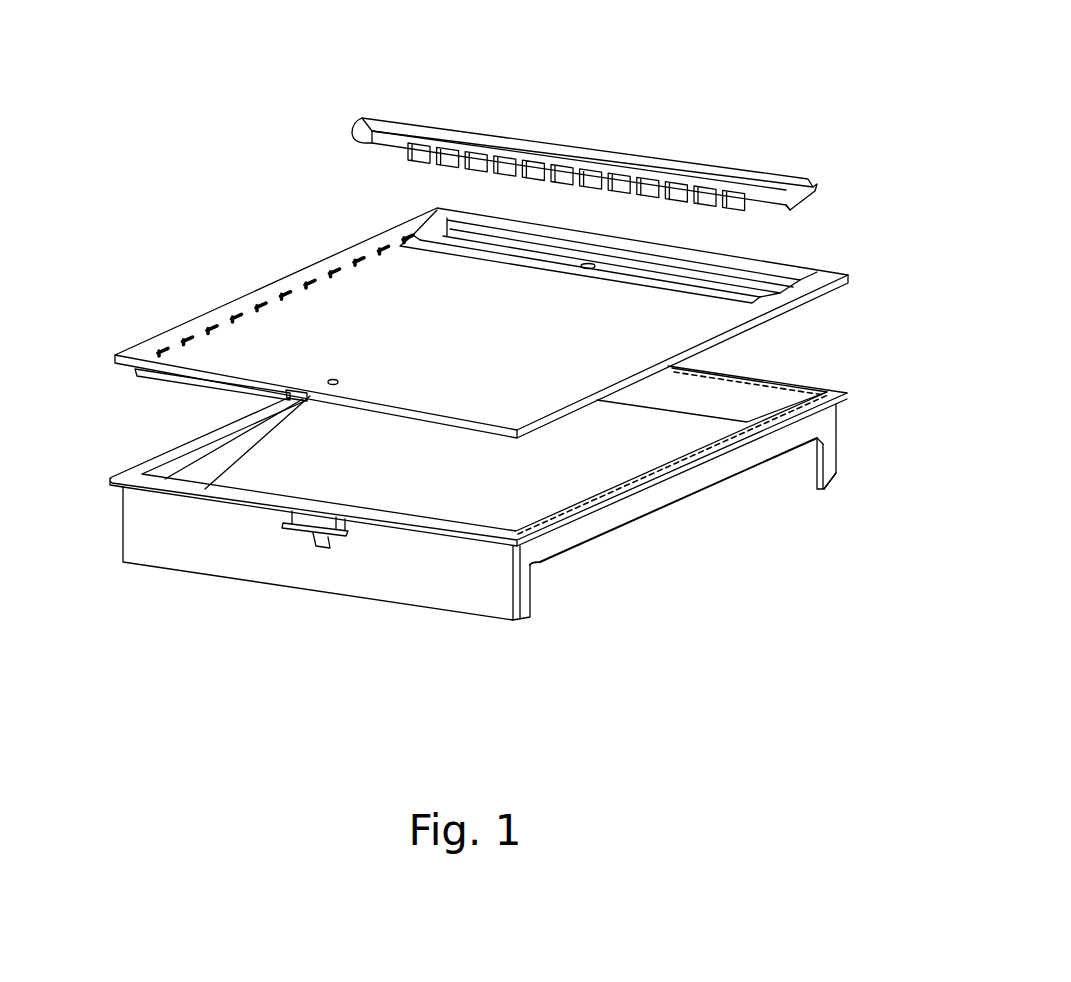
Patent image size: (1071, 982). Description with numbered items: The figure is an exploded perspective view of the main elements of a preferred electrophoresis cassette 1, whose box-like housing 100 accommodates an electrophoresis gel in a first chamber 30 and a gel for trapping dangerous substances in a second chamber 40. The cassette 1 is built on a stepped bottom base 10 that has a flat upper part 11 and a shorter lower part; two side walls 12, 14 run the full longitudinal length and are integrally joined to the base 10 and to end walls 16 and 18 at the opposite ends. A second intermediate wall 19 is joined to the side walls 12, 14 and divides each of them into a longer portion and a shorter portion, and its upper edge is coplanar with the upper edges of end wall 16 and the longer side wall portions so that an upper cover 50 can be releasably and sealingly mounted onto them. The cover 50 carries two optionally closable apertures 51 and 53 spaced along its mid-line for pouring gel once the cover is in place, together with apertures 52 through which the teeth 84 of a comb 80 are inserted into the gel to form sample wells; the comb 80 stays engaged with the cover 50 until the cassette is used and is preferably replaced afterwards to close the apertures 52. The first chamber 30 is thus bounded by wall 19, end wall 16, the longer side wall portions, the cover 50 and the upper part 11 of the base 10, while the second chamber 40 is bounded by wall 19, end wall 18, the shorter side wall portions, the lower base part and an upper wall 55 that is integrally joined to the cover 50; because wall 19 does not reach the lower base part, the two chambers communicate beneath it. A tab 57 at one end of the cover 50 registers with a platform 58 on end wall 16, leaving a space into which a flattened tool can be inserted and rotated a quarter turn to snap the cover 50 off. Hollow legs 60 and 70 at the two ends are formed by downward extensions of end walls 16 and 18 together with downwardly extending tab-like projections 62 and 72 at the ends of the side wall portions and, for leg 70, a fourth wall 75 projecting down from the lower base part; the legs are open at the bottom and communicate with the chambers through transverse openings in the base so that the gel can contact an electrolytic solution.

The cassette 1 is at (820, 115).
The stepped bottom base 10 is at (543, 502).
The flat upper part 11 is at (587, 475).
The side wall 12 is at (653, 490).
The side wall 14 is at (183, 443).
The end wall 16 is at (273, 570).
The end wall 18 is at (800, 382).
The second intermediate wall 19 is at (143, 375).
The first chamber 30 is at (428, 502).
The second chamber 40 is at (700, 417).
The upper cover 50 is at (357, 287).
The closable aperture 51 is at (590, 263).
The apertures 52 is at (410, 235).
The closable aperture 53 is at (328, 381).
The upper wall 55 is at (440, 218).
The tab 57 is at (288, 396).
The platform 58 is at (287, 527).
The hollow leg 60 is at (338, 562).
The tab-like projections 62 is at (527, 593).
The hollow leg 70 is at (837, 440).
The tab-like projections 72 is at (834, 473).
The fourth wall 75 is at (803, 477).
The comb 80 is at (635, 160).
The teeth 84 is at (503, 167).
The housing 100 is at (680, 487).